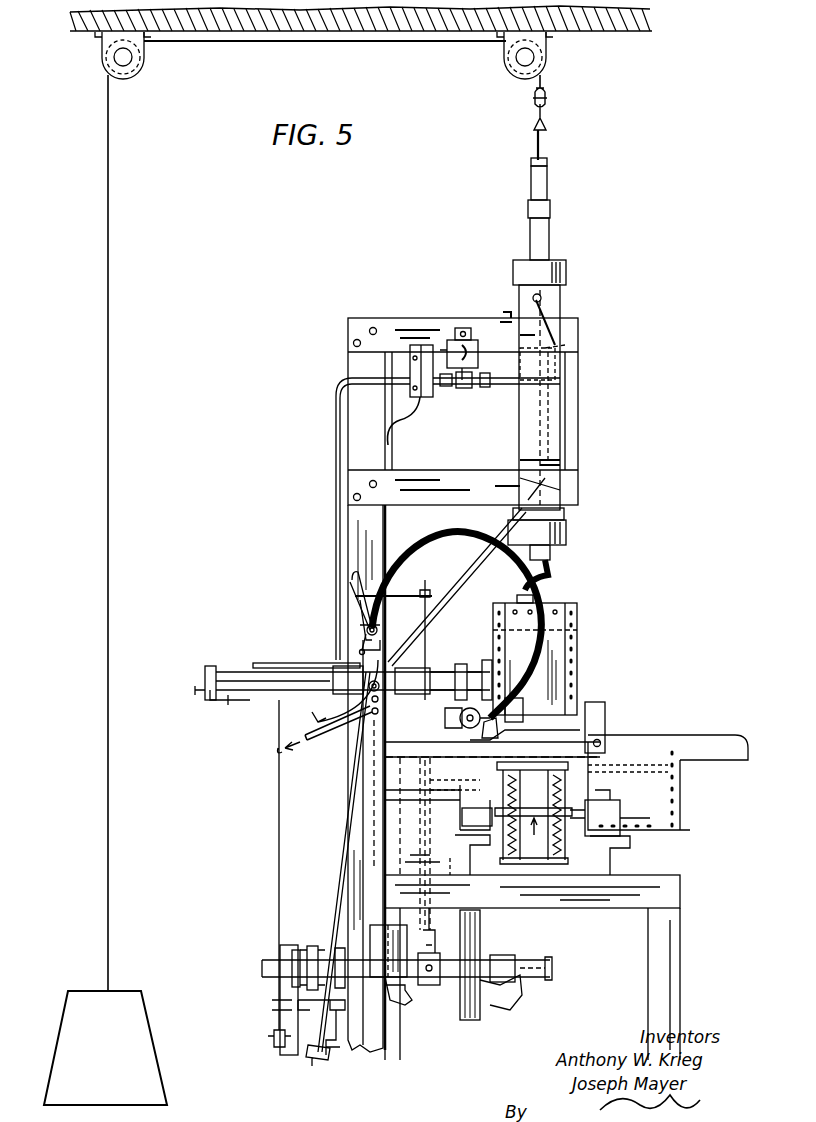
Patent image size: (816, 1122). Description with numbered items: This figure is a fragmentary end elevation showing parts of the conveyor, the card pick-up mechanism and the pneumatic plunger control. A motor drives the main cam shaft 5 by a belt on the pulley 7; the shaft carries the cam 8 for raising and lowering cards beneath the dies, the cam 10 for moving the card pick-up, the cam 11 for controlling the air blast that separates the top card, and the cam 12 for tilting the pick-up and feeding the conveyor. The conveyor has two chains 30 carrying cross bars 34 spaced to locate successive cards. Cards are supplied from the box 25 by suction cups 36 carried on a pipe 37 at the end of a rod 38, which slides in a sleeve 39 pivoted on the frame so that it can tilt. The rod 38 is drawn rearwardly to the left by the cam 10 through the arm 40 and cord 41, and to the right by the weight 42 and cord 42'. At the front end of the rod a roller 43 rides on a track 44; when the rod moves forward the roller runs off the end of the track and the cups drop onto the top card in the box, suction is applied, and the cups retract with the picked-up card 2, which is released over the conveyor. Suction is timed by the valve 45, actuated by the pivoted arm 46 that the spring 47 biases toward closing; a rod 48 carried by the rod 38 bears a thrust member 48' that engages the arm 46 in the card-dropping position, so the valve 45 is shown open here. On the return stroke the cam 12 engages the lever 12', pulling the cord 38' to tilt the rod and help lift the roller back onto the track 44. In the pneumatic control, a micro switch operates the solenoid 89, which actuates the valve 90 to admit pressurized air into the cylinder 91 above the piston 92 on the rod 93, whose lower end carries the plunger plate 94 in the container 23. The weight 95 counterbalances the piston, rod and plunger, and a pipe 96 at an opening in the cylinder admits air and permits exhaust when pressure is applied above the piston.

The card 2 is at (560, 735).
The main cam shaft 5 is at (546, 976).
The pulley 7 is at (470, 1022).
The cam 8 is at (430, 988).
The cam 10 is at (340, 982).
The cam 11 is at (312, 948).
The cam 12 is at (285, 1000).
The lever 12' is at (301, 1049).
The container 23 is at (518, 718).
The box 25 is at (681, 792).
The chain 30 is at (548, 862).
The cross bar 34 is at (556, 862).
The suction cup 36 is at (518, 735).
The pipe 37 is at (500, 728).
The rod 38 is at (342, 677).
The cord 38' is at (259, 873).
The sleeve 39 is at (402, 678).
The arm 40 is at (333, 1065).
The cord 41 is at (348, 862).
The weight 42 is at (401, 1007).
The cord 42' is at (291, 720).
The roller 43 is at (460, 718).
The track 44 is at (606, 746).
The valve 45 is at (362, 636).
The arm 46 is at (362, 612).
The spring 47 is at (355, 582).
The rod 48 is at (448, 625).
The thrust member 48' is at (445, 640).
The solenoid 89 is at (432, 390).
The valve 90 is at (458, 340).
The cylinder 91 is at (566, 412).
The piston 92 is at (580, 350).
The rod 93 is at (548, 578).
The plunger plate 94 is at (578, 612).
The weight 95 is at (128, 998).
The pipe 96 is at (462, 568).